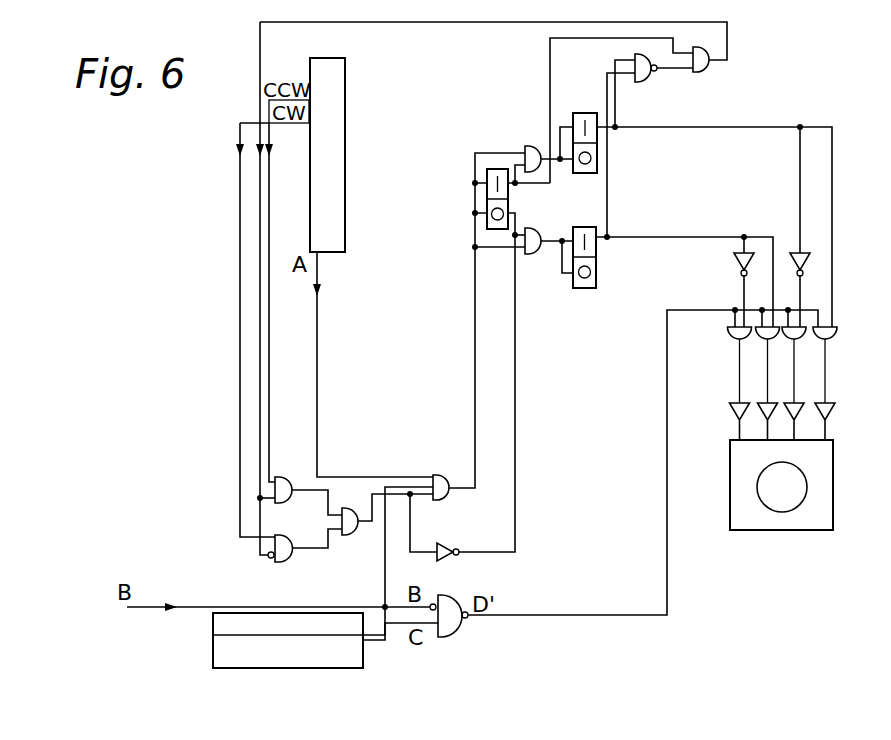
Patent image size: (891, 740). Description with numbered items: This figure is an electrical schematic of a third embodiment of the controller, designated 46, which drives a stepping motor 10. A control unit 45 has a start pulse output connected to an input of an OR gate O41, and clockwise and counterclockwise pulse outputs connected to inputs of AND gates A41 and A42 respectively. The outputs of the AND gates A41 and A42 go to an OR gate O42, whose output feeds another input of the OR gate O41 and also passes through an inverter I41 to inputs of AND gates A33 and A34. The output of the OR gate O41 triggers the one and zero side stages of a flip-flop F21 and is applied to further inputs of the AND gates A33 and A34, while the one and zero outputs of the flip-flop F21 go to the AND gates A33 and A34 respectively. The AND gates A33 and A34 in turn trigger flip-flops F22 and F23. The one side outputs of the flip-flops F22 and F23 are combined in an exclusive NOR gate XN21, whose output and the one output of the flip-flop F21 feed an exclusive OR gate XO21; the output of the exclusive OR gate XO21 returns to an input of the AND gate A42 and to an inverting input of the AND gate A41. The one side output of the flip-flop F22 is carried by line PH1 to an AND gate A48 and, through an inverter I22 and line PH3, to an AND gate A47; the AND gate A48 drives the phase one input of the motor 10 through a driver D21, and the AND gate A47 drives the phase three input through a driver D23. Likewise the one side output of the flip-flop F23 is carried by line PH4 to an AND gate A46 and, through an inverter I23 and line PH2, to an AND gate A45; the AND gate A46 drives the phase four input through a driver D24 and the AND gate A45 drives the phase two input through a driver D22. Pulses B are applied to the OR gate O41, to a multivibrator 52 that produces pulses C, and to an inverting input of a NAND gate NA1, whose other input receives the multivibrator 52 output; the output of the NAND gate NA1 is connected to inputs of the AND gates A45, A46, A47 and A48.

The motor 10 is at (833, 502).
The control unit 45 is at (345, 150).
The controller 46 is at (186, 277).
The multivibrator 52 is at (363, 665).
The flip-flop F21 is at (492, 169).
The flip-flop F22 is at (585, 113).
The flip-flop F23 is at (580, 288).
The AND gate A33 is at (528, 146).
The AND gate A34 is at (531, 228).
The exclusive OR gate XO21 is at (709, 52).
The exclusive NOR gate XN21 is at (645, 82).
The inverter I22 is at (803, 250).
The inverter I23 is at (734, 260).
The line PH1 is at (832, 323).
The line PH2 is at (803, 277).
The line PH3 is at (775, 297).
The line PH4 is at (746, 288).
The AND gate A45 is at (728, 332).
The AND gate A46 is at (748, 340).
The AND gate A47 is at (804, 342).
The AND gate A48 is at (830, 333).
The driver D21 is at (832, 412).
The driver D22 is at (732, 408).
The driver D23 is at (802, 412).
The driver D24 is at (760, 410).
The AND gate A41 is at (288, 562).
The AND gate A42 is at (283, 478).
The OR gate O41 is at (440, 476).
The OR gate O42 is at (350, 536).
The inverter I41 is at (453, 541).
The NAND gate NA1 is at (455, 636).